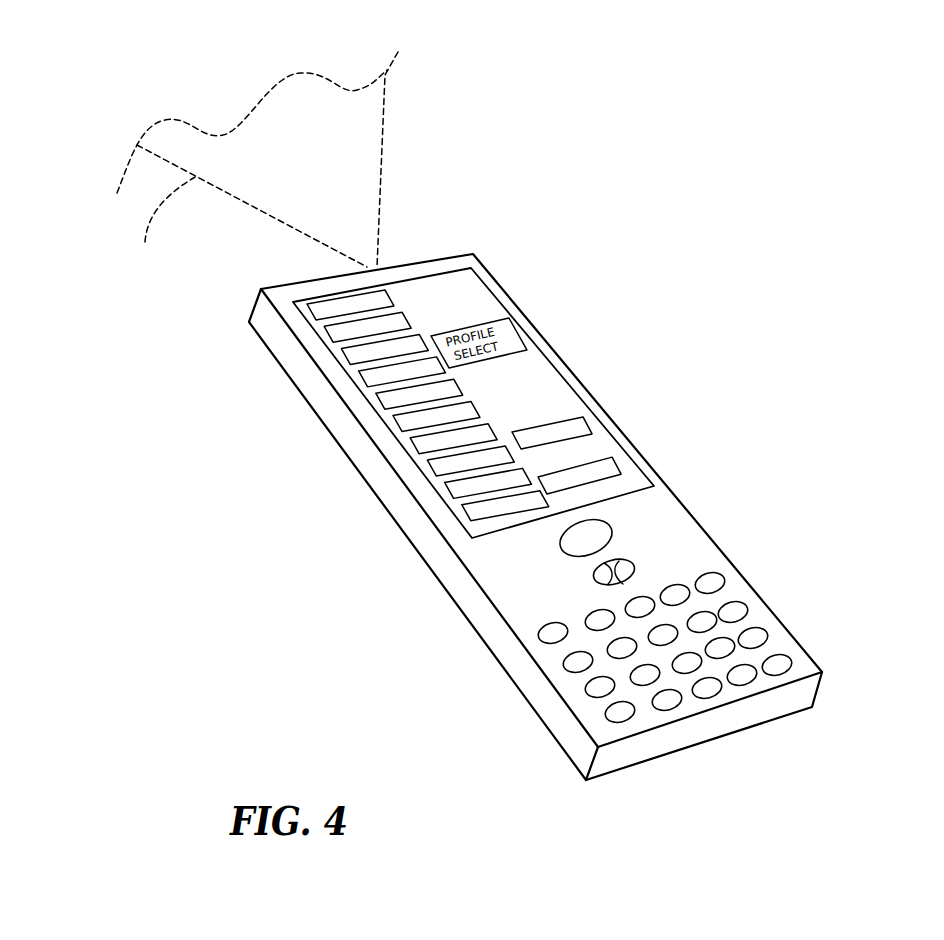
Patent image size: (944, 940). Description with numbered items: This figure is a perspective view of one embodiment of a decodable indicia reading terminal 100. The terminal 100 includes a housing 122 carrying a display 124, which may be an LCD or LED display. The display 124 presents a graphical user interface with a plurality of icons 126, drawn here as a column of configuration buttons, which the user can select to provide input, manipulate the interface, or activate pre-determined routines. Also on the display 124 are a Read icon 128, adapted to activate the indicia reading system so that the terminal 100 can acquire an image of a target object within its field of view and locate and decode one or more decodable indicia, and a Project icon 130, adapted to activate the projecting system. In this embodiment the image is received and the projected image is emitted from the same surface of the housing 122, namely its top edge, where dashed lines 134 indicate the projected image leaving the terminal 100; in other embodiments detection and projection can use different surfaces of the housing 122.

The decodable indicia reading terminal 100 is at (464, 190).
The housing 122 is at (473, 612).
The display 124 is at (528, 390).
The icons 126 is at (443, 500).
The Read icon 128 is at (613, 462).
The Project icon 130 is at (577, 417).
The projected image beams 134 is at (245, 175).